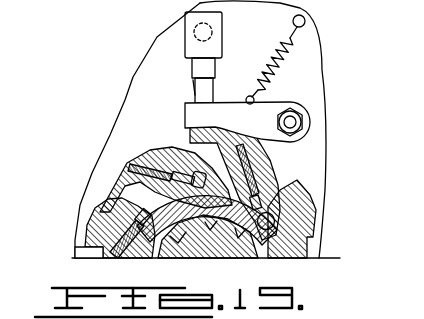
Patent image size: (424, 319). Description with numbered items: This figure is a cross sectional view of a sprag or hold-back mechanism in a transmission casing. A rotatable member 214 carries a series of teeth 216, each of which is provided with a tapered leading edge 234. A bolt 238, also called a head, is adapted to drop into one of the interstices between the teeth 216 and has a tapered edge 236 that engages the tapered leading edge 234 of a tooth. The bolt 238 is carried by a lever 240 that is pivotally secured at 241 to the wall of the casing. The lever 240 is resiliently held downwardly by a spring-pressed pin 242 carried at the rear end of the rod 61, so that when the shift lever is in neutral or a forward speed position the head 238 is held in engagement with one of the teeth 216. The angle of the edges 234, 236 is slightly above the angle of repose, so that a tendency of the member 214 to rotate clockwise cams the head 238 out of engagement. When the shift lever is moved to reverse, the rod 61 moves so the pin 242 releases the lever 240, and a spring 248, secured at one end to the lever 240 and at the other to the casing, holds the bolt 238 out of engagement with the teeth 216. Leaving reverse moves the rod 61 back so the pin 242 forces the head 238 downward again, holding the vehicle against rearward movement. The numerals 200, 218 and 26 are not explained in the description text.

The threaded adjusting screw 200 is at (113, 9).
The rod 61 is at (178, 17).
The spring-pressed pin 242 is at (193, 80).
The bolt 238 is at (187, 112).
The tapered edge 236 is at (188, 133).
The tapered leading edge 234 is at (118, 197).
The follower block 218 is at (95, 210).
The teeth 216 is at (87, 232).
The member 214 is at (319, 202).
The lever 240 is at (229, 103).
The spring 248 is at (292, 45).
The pivot 241 is at (295, 113).
The gear segment 26 is at (232, 245).